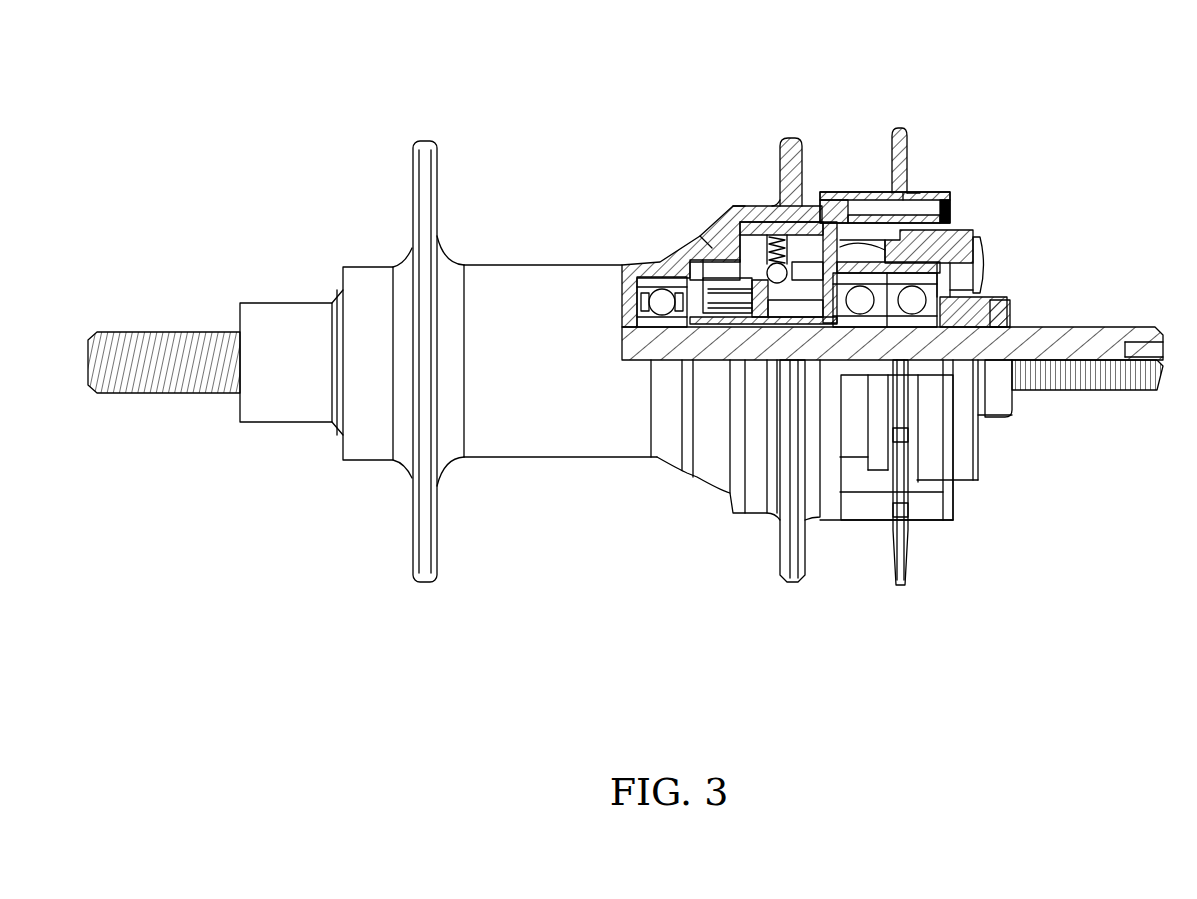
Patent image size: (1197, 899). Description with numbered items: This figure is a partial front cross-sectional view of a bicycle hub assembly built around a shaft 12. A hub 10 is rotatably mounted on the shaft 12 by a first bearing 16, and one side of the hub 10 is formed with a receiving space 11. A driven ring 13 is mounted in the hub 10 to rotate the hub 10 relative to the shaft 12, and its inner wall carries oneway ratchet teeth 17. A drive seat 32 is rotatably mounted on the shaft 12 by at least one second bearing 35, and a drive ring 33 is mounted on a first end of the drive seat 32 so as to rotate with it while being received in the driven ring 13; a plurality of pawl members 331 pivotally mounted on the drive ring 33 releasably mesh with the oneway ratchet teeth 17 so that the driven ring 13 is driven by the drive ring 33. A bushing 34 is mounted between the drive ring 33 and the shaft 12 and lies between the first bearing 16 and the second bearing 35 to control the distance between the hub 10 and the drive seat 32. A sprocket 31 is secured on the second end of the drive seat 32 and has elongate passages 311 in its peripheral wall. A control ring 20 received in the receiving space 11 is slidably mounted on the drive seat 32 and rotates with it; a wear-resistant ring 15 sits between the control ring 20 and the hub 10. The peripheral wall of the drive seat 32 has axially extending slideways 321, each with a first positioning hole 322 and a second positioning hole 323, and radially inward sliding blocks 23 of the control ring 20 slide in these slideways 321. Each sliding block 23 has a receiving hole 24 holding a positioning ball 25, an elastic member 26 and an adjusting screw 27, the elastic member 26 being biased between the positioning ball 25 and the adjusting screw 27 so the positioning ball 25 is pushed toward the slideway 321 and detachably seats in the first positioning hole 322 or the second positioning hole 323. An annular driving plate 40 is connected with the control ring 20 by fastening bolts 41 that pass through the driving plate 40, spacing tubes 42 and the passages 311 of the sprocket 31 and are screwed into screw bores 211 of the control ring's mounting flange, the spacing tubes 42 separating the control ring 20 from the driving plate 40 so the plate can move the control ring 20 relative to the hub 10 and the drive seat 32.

The hub 10 is at (372, 256).
The shaft 12 is at (177, 335).
The receiving space 11 is at (745, 200).
The driven ring 13 is at (712, 248).
The wear-resistant ring 15 is at (745, 248).
The first bearing 16 is at (632, 265).
The oneway ratchet teeth 17 is at (640, 330).
The control ring 20 is at (803, 215).
The sliding blocks 23 is at (818, 222).
The receiving hole 24 is at (788, 140).
The positioning ball 25 is at (755, 215).
The elastic member 26 is at (777, 236).
The adjusting screw 27 is at (779, 262).
The screw bores 211 is at (897, 187).
The sprocket 31 is at (903, 197).
The elongate passage 311 is at (918, 193).
The drive seat 32 is at (980, 263).
The slideways 321 is at (973, 237).
The first positioning hole 322 is at (730, 495).
The second positioning hole 323 is at (767, 515).
The drive ring 33 is at (845, 310).
The pawl members 331 is at (758, 262).
The bushing 34 is at (705, 295).
The second bearing 35 is at (1007, 290).
The driving plate 40 is at (953, 227).
The fastening bolts 41 is at (958, 223).
The spacing tubes 42 is at (927, 192).